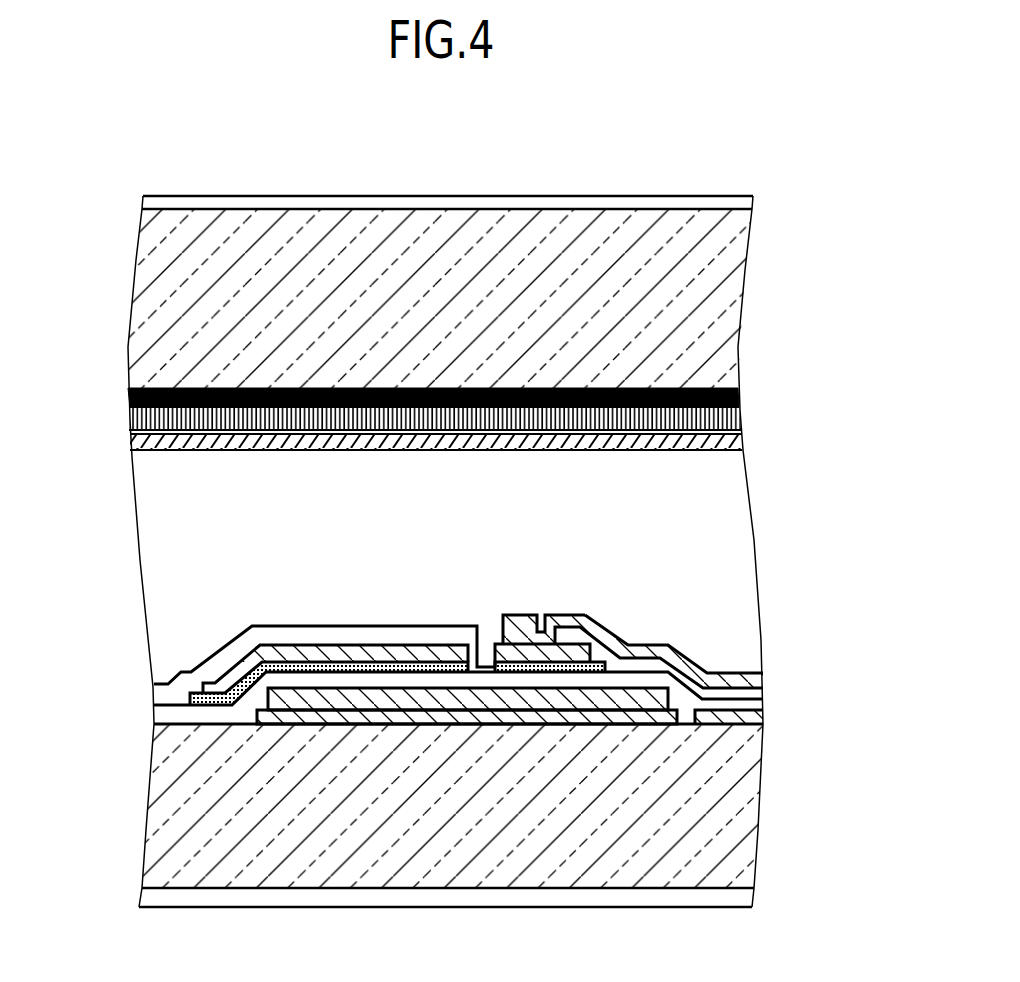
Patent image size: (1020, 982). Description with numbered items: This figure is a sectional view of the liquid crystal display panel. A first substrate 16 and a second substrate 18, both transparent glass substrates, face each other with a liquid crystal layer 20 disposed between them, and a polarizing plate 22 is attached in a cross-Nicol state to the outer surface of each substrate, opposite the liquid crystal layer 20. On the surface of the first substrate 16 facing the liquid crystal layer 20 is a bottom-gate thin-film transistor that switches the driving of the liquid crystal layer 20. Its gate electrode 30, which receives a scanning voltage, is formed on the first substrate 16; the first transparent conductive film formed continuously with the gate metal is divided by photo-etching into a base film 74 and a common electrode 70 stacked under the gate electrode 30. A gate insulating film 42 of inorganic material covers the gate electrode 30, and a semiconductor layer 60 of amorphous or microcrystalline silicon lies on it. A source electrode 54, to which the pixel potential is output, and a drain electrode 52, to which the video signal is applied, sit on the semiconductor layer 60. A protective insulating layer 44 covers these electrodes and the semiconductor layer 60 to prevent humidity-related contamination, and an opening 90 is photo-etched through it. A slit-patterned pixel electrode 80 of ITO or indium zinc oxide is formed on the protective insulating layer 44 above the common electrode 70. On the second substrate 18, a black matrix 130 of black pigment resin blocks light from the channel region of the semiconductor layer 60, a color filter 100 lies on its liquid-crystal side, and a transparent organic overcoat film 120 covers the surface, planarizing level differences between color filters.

The first substrate 16 is at (732, 803).
The second substrate 18 is at (520, 243).
The liquid crystal layer 20 is at (730, 567).
The polarizing plate 22 is at (374, 205).
The gate electrode 30 is at (323, 716).
The gate insulating film 42 is at (447, 692).
The protective insulating layer 44 is at (641, 670).
The drain electrode 52 is at (386, 655).
The source electrode 54 is at (566, 653).
The semiconductor layer 60 is at (513, 670).
The common electrode 70 is at (740, 715).
The base film 74 is at (283, 718).
The pixel electrode 80 is at (745, 679).
The opening 90 is at (547, 640).
The color filter 100 is at (728, 420).
The overcoat film 120 is at (725, 445).
The black matrix 130 is at (128, 402).